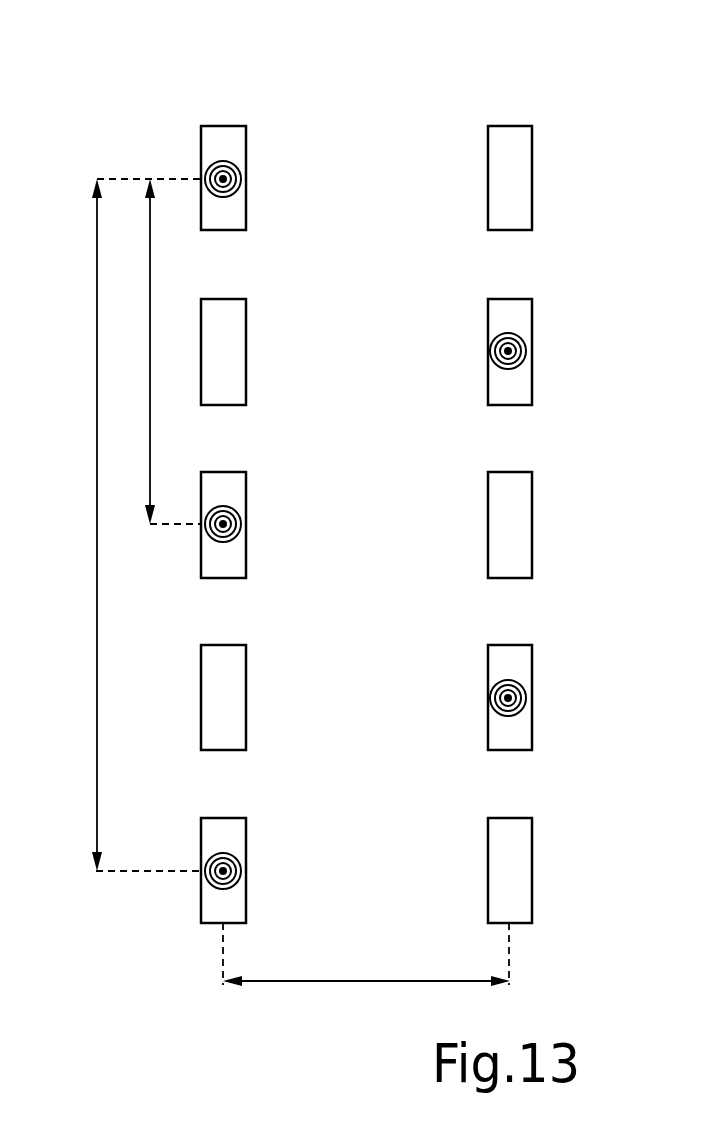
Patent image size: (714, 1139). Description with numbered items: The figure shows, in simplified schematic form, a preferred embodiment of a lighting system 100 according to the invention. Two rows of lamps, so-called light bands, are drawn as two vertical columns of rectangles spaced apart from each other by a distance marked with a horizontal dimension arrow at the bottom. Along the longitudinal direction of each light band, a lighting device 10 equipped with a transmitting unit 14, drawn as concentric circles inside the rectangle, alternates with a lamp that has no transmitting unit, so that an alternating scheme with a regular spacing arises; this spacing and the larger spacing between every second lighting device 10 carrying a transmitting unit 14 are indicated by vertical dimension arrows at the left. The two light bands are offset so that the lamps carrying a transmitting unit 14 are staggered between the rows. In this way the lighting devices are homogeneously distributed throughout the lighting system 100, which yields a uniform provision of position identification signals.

The lighting system 100 is at (116, 95).
The lighting device 10 is at (235, 141).
The transmitting unit 14 is at (241, 179).